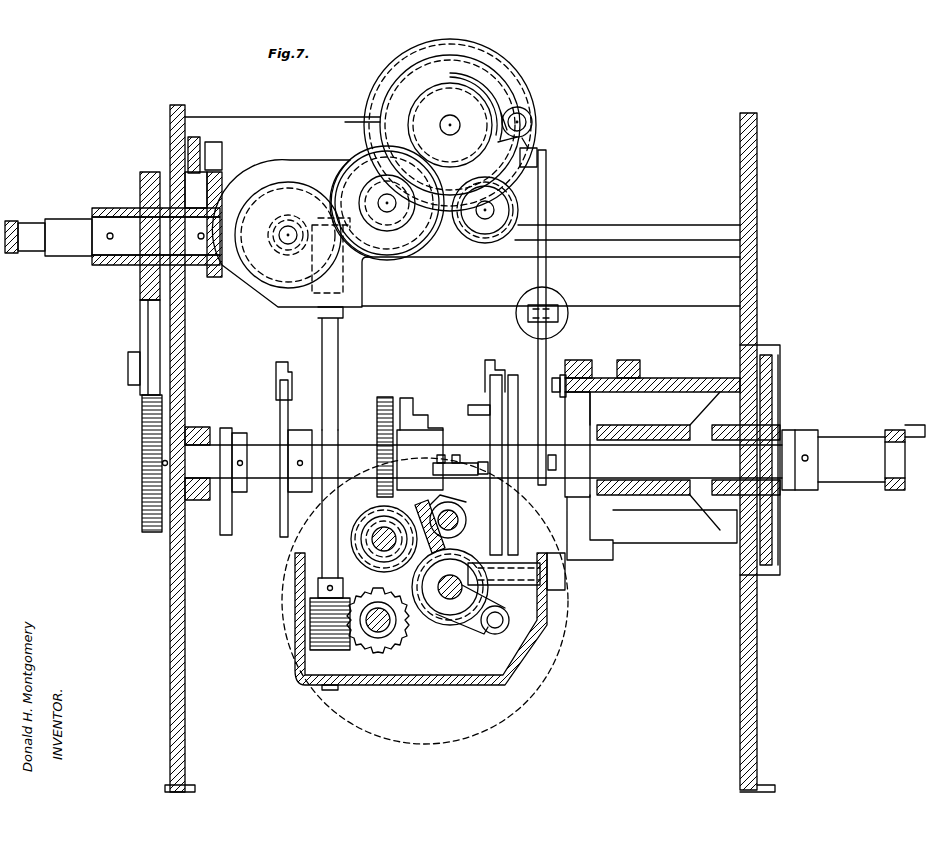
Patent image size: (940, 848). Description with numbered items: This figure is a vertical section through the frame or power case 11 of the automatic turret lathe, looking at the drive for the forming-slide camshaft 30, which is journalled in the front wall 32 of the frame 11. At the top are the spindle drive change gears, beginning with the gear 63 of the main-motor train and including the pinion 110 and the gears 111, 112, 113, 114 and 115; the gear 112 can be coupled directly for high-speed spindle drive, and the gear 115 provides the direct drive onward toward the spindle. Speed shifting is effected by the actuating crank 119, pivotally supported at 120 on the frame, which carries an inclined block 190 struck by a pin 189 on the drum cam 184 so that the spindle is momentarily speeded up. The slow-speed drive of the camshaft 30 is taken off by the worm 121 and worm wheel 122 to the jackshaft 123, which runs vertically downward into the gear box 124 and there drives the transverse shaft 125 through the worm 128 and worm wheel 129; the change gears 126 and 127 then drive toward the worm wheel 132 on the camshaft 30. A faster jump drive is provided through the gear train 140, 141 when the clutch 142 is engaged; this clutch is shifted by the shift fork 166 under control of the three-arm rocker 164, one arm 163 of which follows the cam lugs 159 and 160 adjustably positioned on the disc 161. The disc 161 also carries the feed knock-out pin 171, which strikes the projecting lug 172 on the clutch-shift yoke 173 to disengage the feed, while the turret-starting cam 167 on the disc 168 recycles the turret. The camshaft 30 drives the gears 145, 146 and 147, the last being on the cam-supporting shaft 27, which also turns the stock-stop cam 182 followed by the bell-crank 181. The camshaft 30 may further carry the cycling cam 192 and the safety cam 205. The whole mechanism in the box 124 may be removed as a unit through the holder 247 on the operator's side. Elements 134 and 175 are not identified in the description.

The frame or power case 11 is at (769, 669).
The cam-supporting shaft 27 is at (66, 222).
The forming-slide camshaft 30 is at (273, 478).
The front wall 32 is at (170, 598).
The gear 63 is at (490, 50).
The pinion 110 is at (482, 240).
The change gear 111 is at (410, 66).
The change gear 112 is at (386, 104).
The change gear 113 is at (376, 232).
The change gear 114 is at (340, 178).
The change gear 115 is at (248, 275).
The actuating crank 119 is at (546, 190).
The pivot 120 is at (564, 304).
The worm 121 is at (286, 246).
The worm wheel 122 is at (305, 215).
The jackshaft 123 is at (338, 340).
The gear box 124 is at (466, 686).
The transverse shaft 125 is at (383, 633).
The change gear 126 is at (364, 652).
The change gear 127 is at (364, 518).
The worm 128 is at (312, 622).
The worm wheel 129 is at (394, 632).
The worm wheel 132 is at (386, 396).
The bolt 134 is at (452, 472).
The gear 140 is at (425, 612).
The gear 141 is at (338, 543).
The clutch 142 is at (470, 556).
The gear 145 is at (142, 488).
The gear 146 is at (150, 336).
The gear 147 is at (150, 286).
The cam lug 159 is at (466, 513).
The cam lug 160 is at (490, 364).
The disc 161 is at (496, 420).
The arm 163 is at (530, 548).
The three-arm rocker 164 is at (470, 630).
The shift fork 166 is at (500, 596).
The turret-starting cam 167 is at (276, 370).
The disc 168 is at (283, 409).
The feed knock-out pin 171 is at (476, 405).
The projecting lug 172 is at (482, 463).
The clutch-shift yoke 173 is at (448, 472).
The plate 175 is at (228, 535).
The bell-crank 181 is at (200, 140).
The stock-stop cam 182 is at (218, 180).
The drum cam 184 is at (630, 360).
The pin 189 is at (556, 376).
The inclined block 190 is at (558, 462).
The cycling cam 192 is at (893, 428).
The safety cam 205 is at (420, 412).
The holder 247 is at (540, 716).